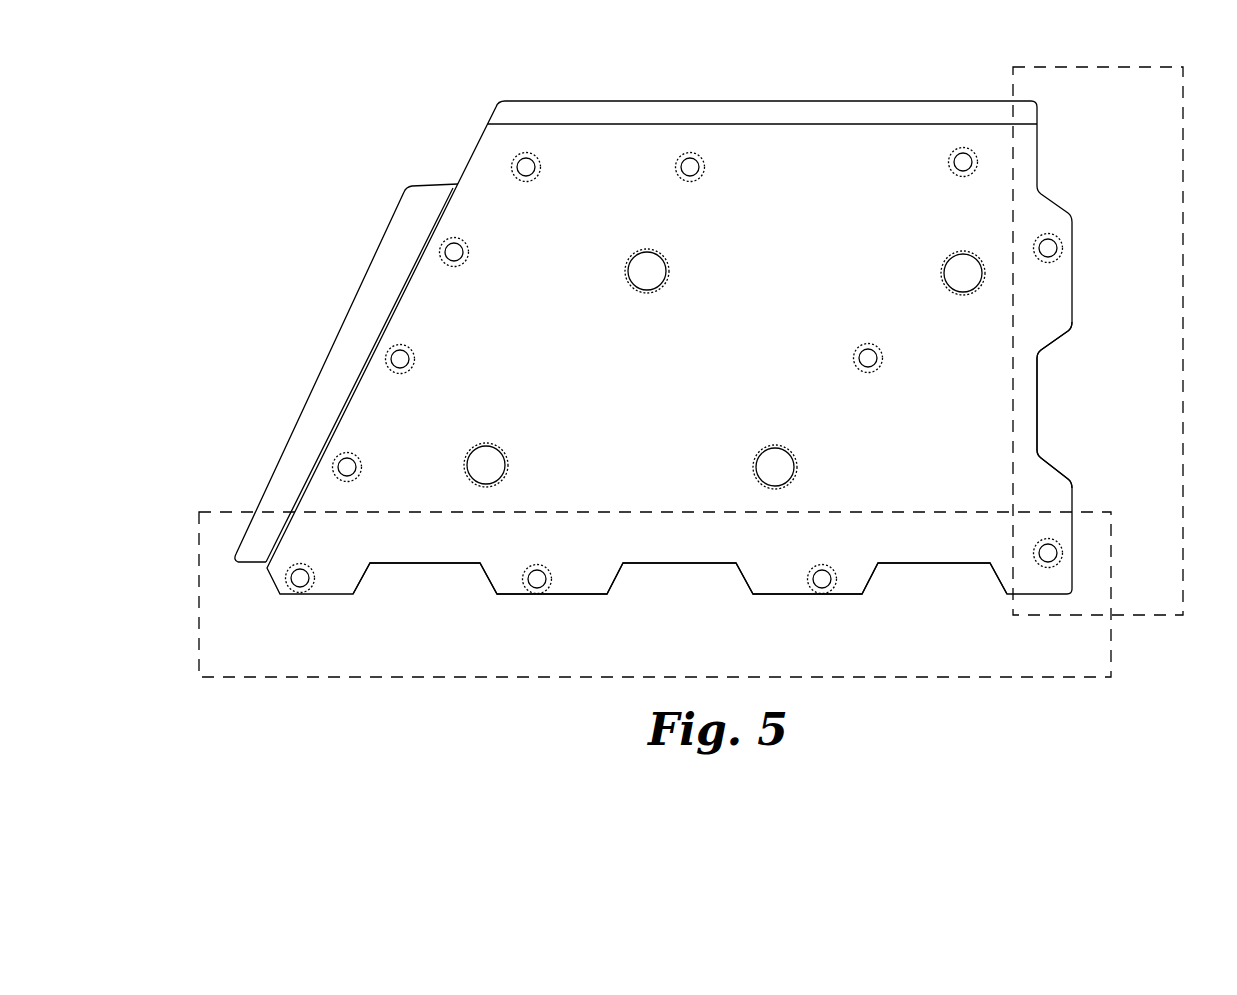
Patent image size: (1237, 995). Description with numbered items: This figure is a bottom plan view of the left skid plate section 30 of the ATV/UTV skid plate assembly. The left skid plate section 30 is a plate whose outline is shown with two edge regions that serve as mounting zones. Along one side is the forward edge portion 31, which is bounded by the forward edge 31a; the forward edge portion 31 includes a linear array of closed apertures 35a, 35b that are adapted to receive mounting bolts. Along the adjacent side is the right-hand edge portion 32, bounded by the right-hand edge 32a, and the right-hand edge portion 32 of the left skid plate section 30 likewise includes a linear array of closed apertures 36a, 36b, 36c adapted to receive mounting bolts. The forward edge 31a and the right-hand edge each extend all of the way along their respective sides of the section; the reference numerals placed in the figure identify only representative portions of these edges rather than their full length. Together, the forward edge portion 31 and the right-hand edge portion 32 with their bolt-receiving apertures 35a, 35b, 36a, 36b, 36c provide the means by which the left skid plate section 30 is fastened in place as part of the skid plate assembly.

The left skid plate section 30 is at (314, 158).
The forward edge portion 31 is at (1183, 102).
The forward edge 31a is at (1078, 297).
The right-hand edge portion 32 is at (905, 677).
The right-hand edge 32a is at (369, 588).
The closed aperture 35a is at (1048, 248).
The closed aperture 35b is at (1048, 553).
The closed aperture 36a is at (822, 576).
The closed aperture 36b is at (537, 576).
The closed aperture 36c is at (300, 575).